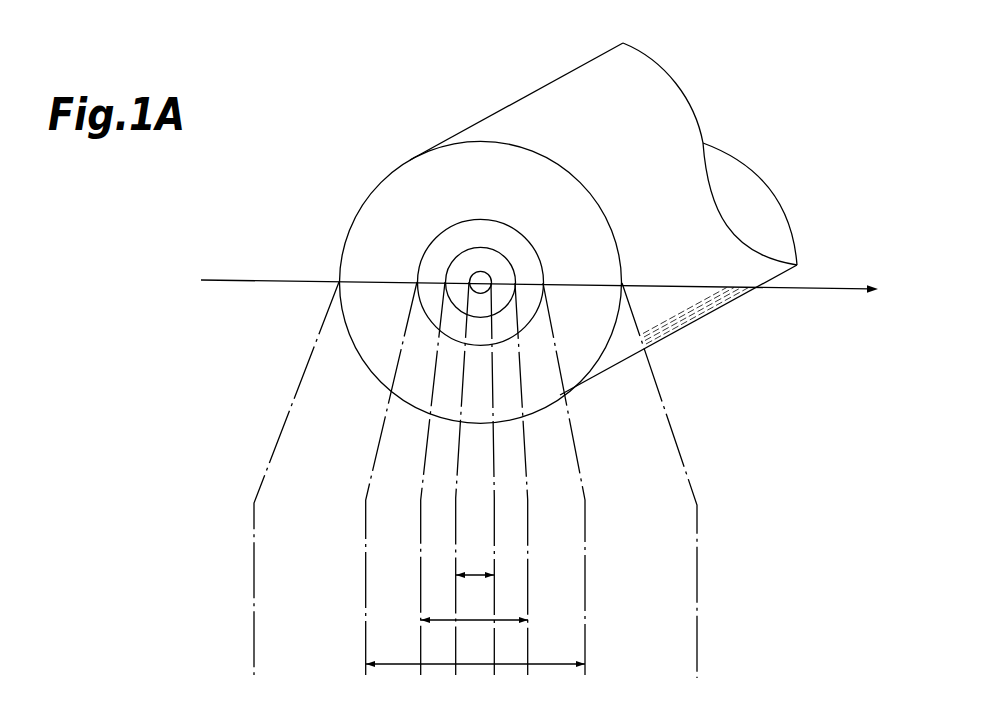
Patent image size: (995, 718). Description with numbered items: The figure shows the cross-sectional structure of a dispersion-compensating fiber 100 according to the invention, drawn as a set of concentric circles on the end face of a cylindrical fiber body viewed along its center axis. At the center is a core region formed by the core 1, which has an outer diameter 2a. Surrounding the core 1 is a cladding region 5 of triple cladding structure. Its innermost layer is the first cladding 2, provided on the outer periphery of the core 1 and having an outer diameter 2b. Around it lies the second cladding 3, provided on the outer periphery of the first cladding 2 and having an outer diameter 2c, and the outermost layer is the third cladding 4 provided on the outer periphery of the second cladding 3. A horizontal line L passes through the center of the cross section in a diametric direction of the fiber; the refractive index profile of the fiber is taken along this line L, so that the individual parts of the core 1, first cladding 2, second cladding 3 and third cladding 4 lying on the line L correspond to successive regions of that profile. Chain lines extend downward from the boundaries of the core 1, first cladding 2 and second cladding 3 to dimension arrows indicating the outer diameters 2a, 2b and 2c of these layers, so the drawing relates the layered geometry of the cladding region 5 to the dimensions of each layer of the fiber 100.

The core 1 is at (483, 270).
The first cladding 2 is at (467, 252).
The second cladding 3 is at (433, 253).
The third cladding 4 is at (358, 248).
The cladding region 5 is at (362, 85).
The dispersion-compensating fiber 100 is at (653, 163).
The outer diameter of the core 2a is at (475, 562).
The outer diameter of the first cladding 2b is at (474, 607).
The outer diameter of the second cladding 2c is at (475, 652).
The line L is at (552, 289).